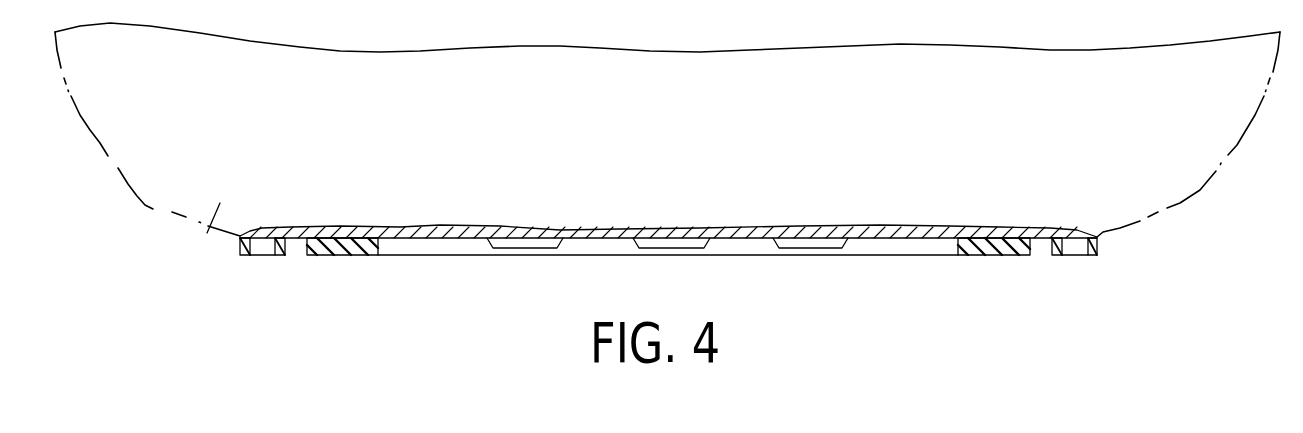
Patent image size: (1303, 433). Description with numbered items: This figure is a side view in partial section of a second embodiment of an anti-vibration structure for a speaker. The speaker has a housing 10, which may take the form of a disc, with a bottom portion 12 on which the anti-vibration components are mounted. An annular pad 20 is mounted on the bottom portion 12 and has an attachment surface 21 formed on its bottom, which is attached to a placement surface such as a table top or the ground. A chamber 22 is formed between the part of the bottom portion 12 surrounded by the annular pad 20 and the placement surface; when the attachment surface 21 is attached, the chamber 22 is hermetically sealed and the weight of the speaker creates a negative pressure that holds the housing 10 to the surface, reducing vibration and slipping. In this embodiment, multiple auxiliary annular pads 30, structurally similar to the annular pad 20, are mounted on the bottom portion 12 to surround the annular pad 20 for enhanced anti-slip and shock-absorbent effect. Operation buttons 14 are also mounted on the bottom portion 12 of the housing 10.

The housing 10 is at (145, 207).
The bottom portion 12 is at (205, 235).
The operation buttons 14 is at (833, 240).
The annular pad 20 is at (1020, 262).
The attachment surface 21 is at (348, 255).
The chamber 22 is at (412, 245).
The auxiliary annular pads 30 is at (243, 255).